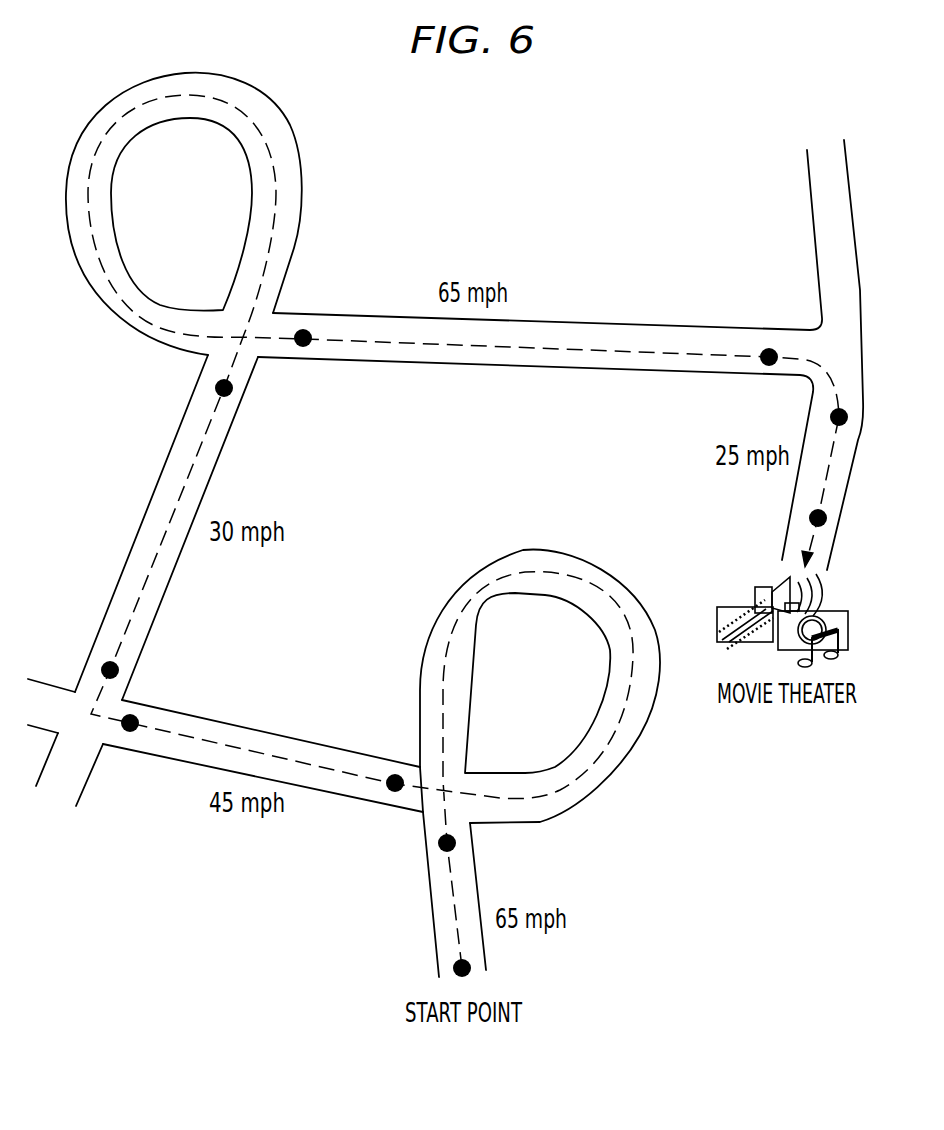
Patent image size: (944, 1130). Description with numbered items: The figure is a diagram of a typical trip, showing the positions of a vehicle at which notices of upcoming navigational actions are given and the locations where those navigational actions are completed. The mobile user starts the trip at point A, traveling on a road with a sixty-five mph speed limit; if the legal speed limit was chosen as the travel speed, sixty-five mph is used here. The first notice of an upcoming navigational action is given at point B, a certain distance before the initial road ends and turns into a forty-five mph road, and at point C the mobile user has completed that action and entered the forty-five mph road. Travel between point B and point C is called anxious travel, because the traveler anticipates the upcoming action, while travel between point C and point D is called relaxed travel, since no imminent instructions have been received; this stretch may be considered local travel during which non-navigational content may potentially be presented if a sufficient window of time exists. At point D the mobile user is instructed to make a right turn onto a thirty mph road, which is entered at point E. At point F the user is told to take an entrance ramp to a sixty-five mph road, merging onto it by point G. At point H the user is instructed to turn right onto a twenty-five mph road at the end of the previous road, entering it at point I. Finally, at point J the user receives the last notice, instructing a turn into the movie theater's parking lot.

The start point A is at (476, 972).
The first notice point B is at (468, 847).
The first completed navigational action point C is at (395, 758).
The second notice point D is at (130, 749).
The second completed navigational action point E is at (94, 657).
The third notice point F is at (207, 382).
The third completed navigational action point G is at (303, 362).
The fourth notice point H is at (769, 328).
The fourth completed navigational action point I is at (821, 417).
The last notice point J is at (801, 510).